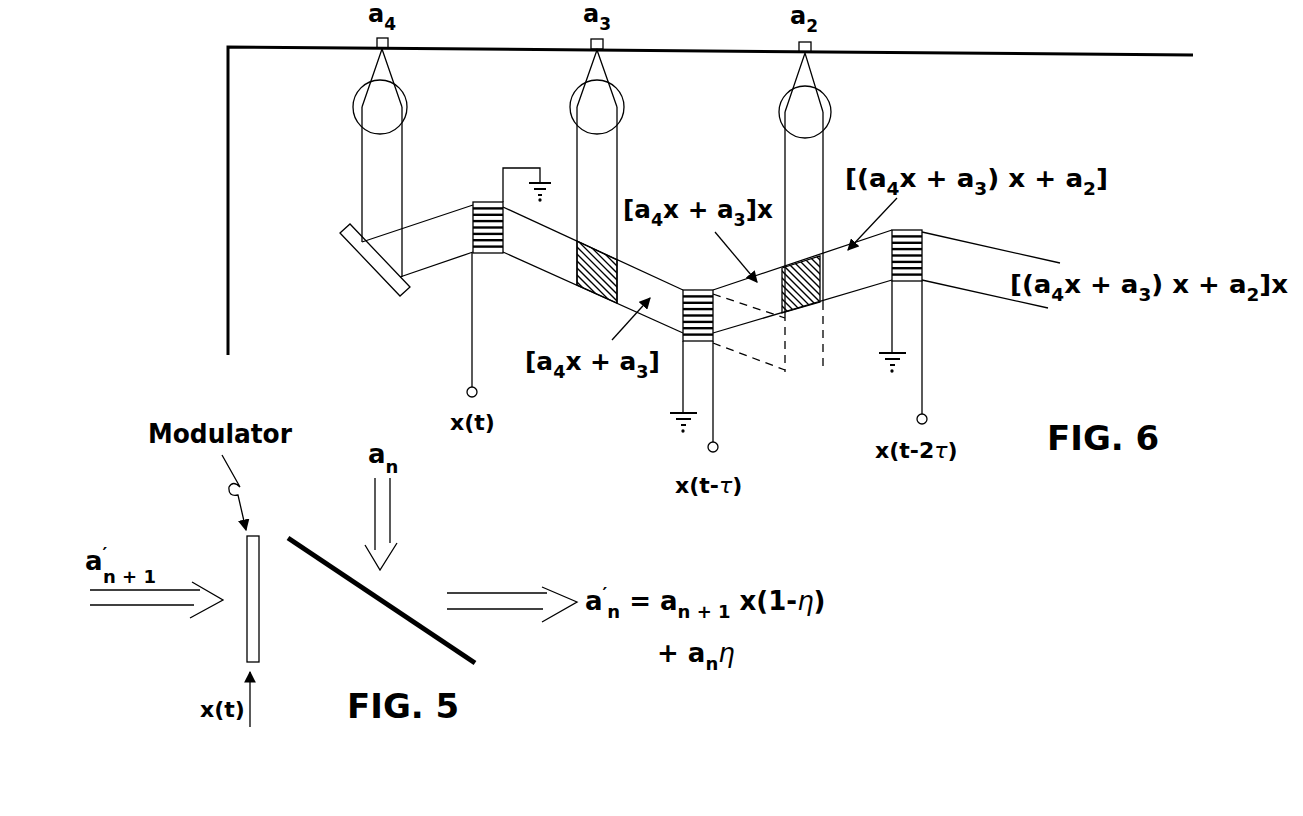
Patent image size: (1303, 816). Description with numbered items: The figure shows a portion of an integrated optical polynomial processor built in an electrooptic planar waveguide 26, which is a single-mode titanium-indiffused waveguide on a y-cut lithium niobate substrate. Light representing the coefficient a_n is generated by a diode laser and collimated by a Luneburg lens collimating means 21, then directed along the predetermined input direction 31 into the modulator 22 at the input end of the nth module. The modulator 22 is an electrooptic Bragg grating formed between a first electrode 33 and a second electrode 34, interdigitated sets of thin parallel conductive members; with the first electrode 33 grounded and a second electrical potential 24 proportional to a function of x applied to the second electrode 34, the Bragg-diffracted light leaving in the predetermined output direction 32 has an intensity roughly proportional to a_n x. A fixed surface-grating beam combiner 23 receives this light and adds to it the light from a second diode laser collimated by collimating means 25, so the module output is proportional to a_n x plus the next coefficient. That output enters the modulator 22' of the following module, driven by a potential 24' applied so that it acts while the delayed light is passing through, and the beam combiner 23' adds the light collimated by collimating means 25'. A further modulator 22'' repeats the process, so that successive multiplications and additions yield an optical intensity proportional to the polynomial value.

The collimating means 21 is at (358, 100).
The modulator 22 is at (491, 207).
The modulator 22' is at (681, 337).
The modulator 22'' is at (949, 246).
The beam combiner 23 is at (595, 281).
The beam combiner 23' is at (802, 299).
The second electrical potential 24 is at (452, 325).
The second electrical potential 24' is at (743, 396).
The collimating means 25 is at (573, 107).
The collimating means 25' is at (769, 112).
The electrooptic planar waveguide 26 is at (301, 199).
The predetermined input direction 31 is at (460, 251).
The predetermined output direction 32 is at (657, 280).
The first electrode 33 is at (892, 264).
The second electrode 34 is at (924, 255).